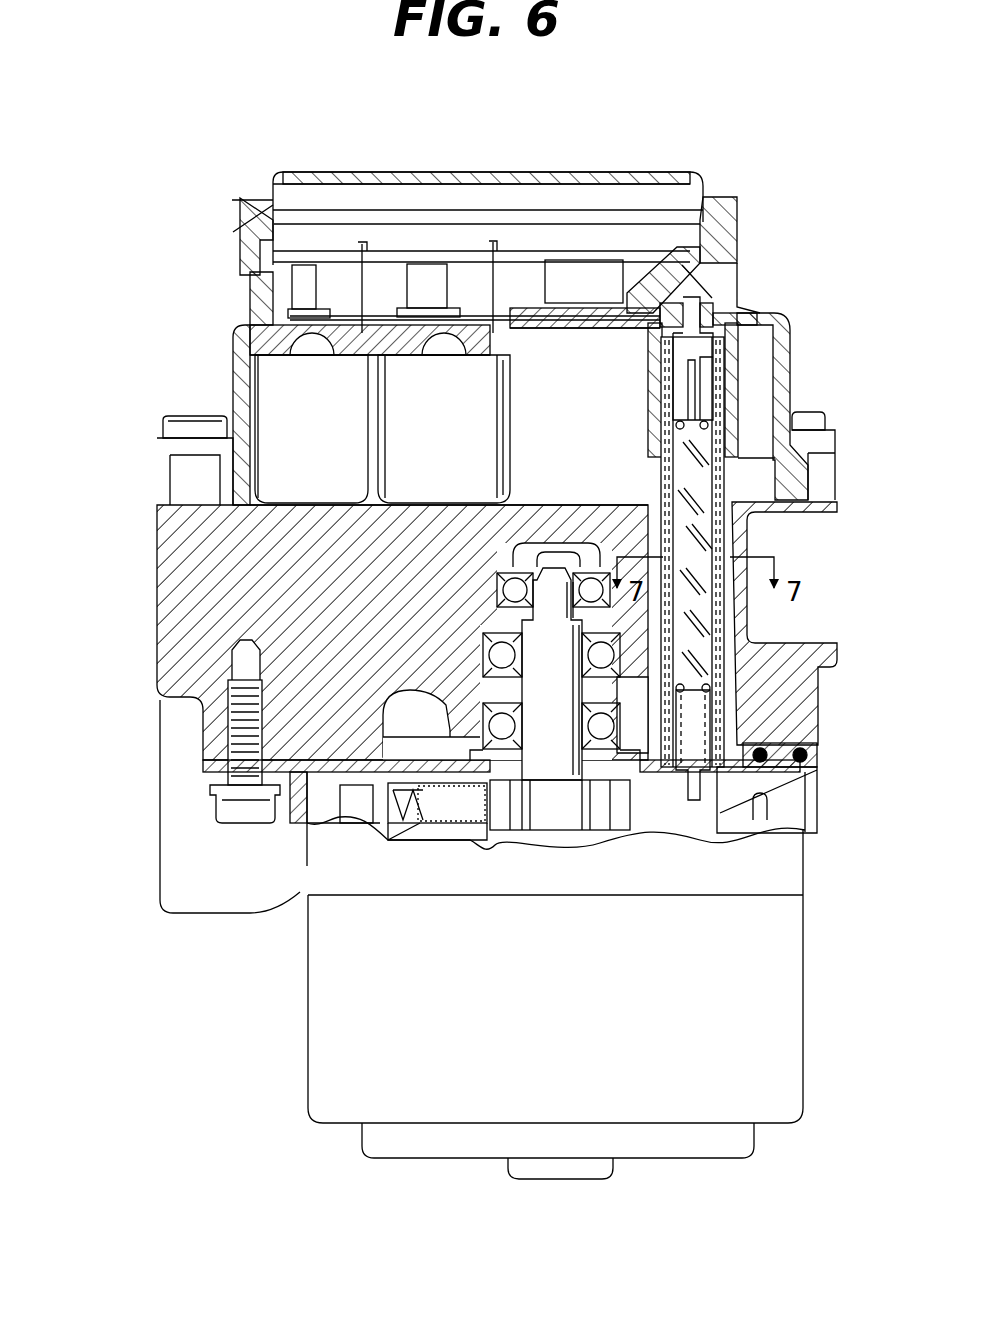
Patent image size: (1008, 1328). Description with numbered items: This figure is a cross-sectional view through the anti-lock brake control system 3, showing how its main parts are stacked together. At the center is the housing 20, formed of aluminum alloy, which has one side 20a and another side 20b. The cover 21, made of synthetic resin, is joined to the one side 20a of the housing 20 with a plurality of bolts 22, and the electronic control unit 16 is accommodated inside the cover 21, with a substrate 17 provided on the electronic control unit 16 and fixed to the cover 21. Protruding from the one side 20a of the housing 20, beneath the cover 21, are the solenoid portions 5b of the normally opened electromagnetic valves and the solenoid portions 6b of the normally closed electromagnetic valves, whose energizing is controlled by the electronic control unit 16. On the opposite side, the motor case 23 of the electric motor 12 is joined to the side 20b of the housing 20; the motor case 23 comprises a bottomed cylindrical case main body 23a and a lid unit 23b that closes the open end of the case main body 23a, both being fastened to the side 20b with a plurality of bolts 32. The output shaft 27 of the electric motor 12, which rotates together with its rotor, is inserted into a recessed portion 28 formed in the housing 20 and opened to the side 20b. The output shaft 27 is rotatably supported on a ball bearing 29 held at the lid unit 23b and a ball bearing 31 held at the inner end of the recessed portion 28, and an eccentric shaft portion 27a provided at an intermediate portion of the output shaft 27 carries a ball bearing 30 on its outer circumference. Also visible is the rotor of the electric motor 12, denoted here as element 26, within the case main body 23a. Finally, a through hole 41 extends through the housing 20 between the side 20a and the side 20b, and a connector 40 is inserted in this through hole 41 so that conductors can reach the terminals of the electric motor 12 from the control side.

The anti-lock brake control system 3 is at (212, 242).
The electronic control unit 16 is at (517, 246).
The substrate 17 is at (606, 258).
The cover 21 is at (243, 358).
The solenoid portions 5b is at (345, 433).
The solenoid portions 6b is at (455, 433).
The bolts 22 is at (180, 417).
The housing 20 is at (160, 622).
The one side of the housing 20a is at (458, 500).
The another side of the housing 20b is at (323, 783).
The recessed portion 28 is at (558, 575).
The eccentric shaft portion 27a is at (524, 618).
The ball bearing 31 is at (496, 584).
The ball bearing 30 is at (492, 660).
The ball bearing 29 is at (480, 720).
The bolts 32 is at (205, 738).
The motor case 23 is at (99, 800).
The case main body 23a is at (305, 862).
The lid unit 23b is at (207, 770).
The rotor shaft 26 is at (558, 826).
The output shaft 27 is at (578, 795).
The electric motor 12 is at (562, 1046).
The connector 40 is at (737, 612).
The through hole 41 is at (745, 672).